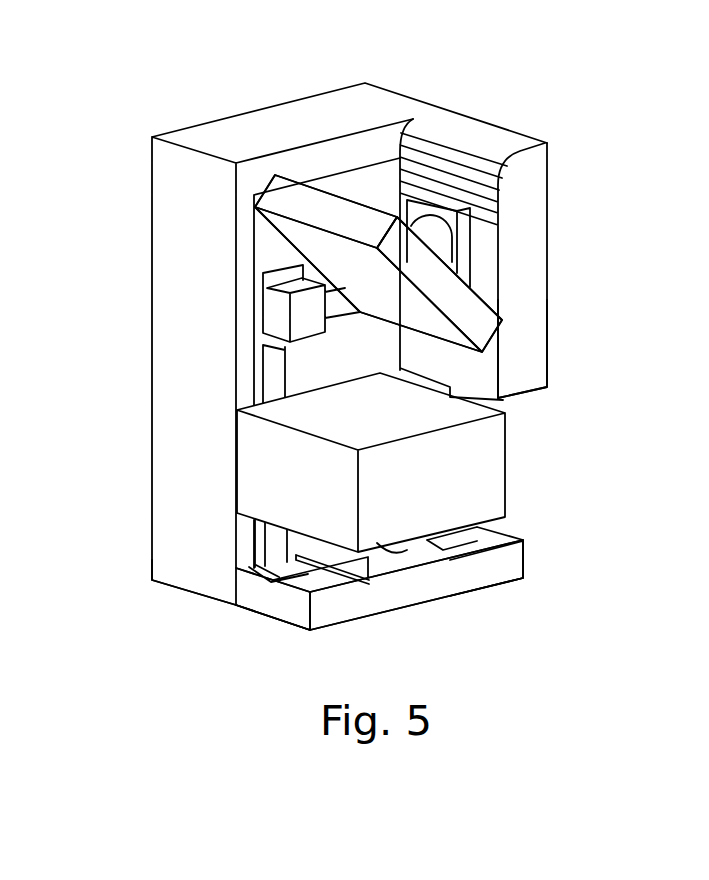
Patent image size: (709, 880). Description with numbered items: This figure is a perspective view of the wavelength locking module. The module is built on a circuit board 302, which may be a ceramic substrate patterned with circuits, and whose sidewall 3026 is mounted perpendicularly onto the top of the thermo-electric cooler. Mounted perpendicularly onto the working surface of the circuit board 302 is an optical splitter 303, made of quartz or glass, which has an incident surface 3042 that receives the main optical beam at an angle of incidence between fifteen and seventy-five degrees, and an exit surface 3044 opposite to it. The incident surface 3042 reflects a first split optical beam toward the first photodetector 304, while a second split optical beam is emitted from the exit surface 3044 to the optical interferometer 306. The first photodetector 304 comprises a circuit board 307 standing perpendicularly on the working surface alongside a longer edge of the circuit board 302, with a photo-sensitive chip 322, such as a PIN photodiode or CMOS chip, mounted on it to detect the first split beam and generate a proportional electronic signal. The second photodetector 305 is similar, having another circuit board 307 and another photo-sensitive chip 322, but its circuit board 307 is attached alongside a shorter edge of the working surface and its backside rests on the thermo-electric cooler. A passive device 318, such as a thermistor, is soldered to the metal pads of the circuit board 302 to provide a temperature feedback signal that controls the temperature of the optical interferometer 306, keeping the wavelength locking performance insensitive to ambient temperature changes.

The circuit board 302 is at (178, 345).
The sidewall 3026 is at (183, 588).
The optical splitter 303 is at (278, 199).
The incident surface 3042 is at (337, 195).
The exit surface 3044 is at (312, 228).
The first photodetector 304 is at (556, 268).
The photo-sensitive chip 322 is at (462, 228).
The circuit board 307 is at (533, 365).
The passive device 318 is at (283, 308).
The optical interferometer 306 is at (262, 477).
The second photodetector 305 is at (483, 597).